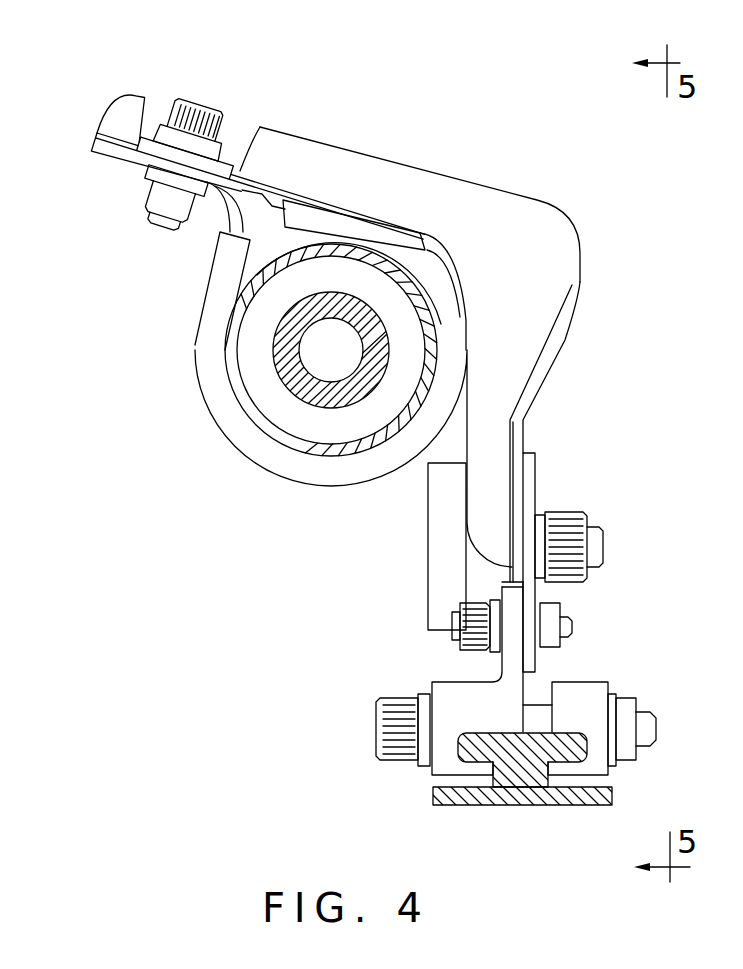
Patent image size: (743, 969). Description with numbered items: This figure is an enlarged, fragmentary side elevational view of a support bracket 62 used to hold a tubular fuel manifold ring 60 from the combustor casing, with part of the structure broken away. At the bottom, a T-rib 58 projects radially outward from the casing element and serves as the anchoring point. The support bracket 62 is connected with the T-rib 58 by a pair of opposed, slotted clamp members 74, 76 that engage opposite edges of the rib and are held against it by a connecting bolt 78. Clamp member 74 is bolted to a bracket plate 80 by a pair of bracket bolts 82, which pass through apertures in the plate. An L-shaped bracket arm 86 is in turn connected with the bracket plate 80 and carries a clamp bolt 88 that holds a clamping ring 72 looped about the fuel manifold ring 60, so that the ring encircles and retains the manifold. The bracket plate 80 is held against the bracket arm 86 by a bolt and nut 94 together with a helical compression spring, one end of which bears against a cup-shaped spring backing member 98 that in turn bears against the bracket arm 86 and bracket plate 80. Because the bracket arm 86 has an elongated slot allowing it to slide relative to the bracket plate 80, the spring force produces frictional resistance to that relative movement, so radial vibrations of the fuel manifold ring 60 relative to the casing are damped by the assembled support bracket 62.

The T-rib 58 is at (520, 770).
The fuel manifold ring 60 is at (262, 433).
The support bracket 62 is at (524, 140).
The clamping ring 72 is at (211, 266).
The clamp member 74 is at (455, 698).
The clamp member 76 is at (582, 682).
The connecting bolt 78 is at (397, 763).
The bracket plate 80 is at (537, 472).
The bracket bolt 82 is at (468, 605).
The L-shaped bracket arm 86 is at (515, 282).
The clamp bolt 88 is at (197, 103).
The nut 94 is at (577, 515).
The spring backing member 98 is at (445, 532).